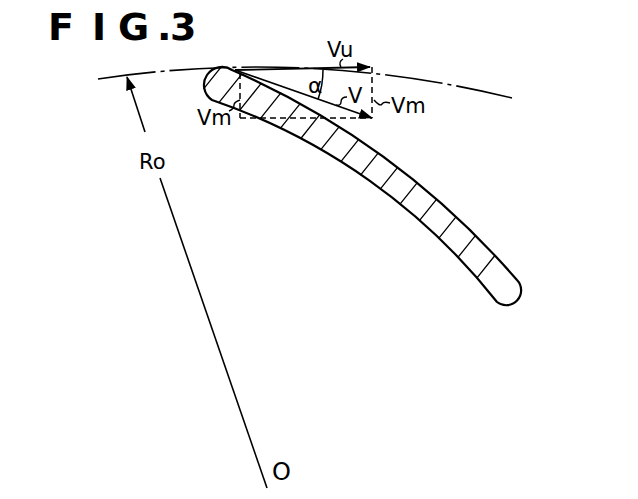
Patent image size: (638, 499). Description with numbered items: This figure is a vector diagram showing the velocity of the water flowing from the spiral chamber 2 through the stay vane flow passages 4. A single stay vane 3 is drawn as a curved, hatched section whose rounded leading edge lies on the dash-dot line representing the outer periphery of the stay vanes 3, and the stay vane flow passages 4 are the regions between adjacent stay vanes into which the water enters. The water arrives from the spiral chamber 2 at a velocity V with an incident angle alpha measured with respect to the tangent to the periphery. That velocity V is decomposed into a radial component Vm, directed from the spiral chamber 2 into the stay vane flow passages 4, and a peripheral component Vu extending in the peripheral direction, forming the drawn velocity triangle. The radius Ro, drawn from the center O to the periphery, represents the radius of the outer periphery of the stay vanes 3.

The spiral chamber 2 is at (432, 65).
The stay vane 3 is at (463, 223).
The stay vane flow passage 4 is at (464, 168).